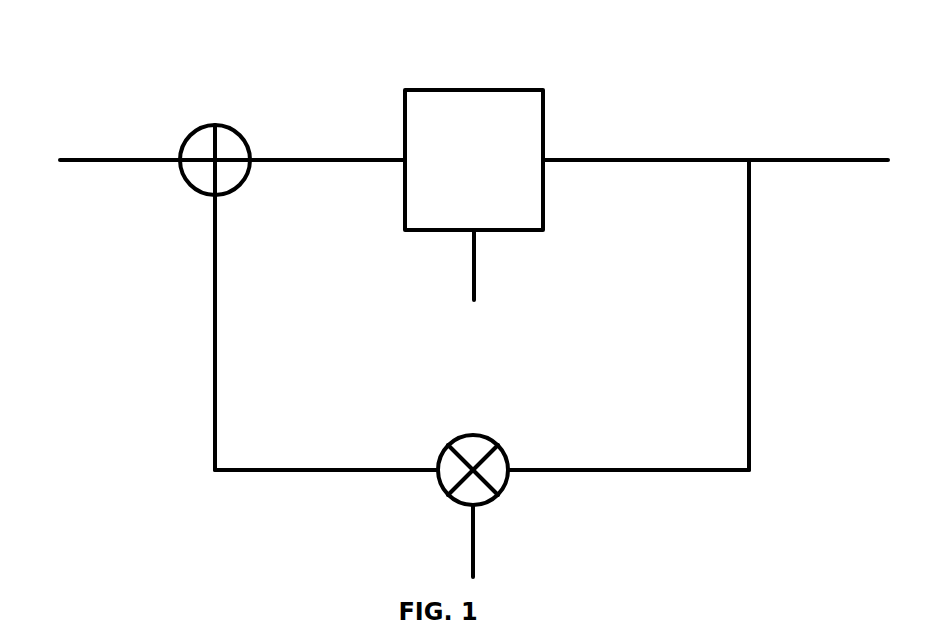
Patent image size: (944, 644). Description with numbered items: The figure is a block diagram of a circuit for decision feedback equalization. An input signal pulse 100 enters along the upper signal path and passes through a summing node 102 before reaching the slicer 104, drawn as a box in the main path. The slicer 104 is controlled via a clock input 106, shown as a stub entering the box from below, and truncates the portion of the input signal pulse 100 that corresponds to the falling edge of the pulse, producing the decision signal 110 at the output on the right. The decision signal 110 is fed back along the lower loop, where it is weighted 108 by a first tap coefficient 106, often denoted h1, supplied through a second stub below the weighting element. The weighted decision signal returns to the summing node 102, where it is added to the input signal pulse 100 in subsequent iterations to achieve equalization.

The input signal pulse 100 is at (90, 158).
The summing node / adder 102 is at (243, 150).
The slicer 104 is at (503, 90).
The clock input 106 is at (472, 270).
The weighting 108 is at (495, 450).
The decision signal 110 is at (834, 158).